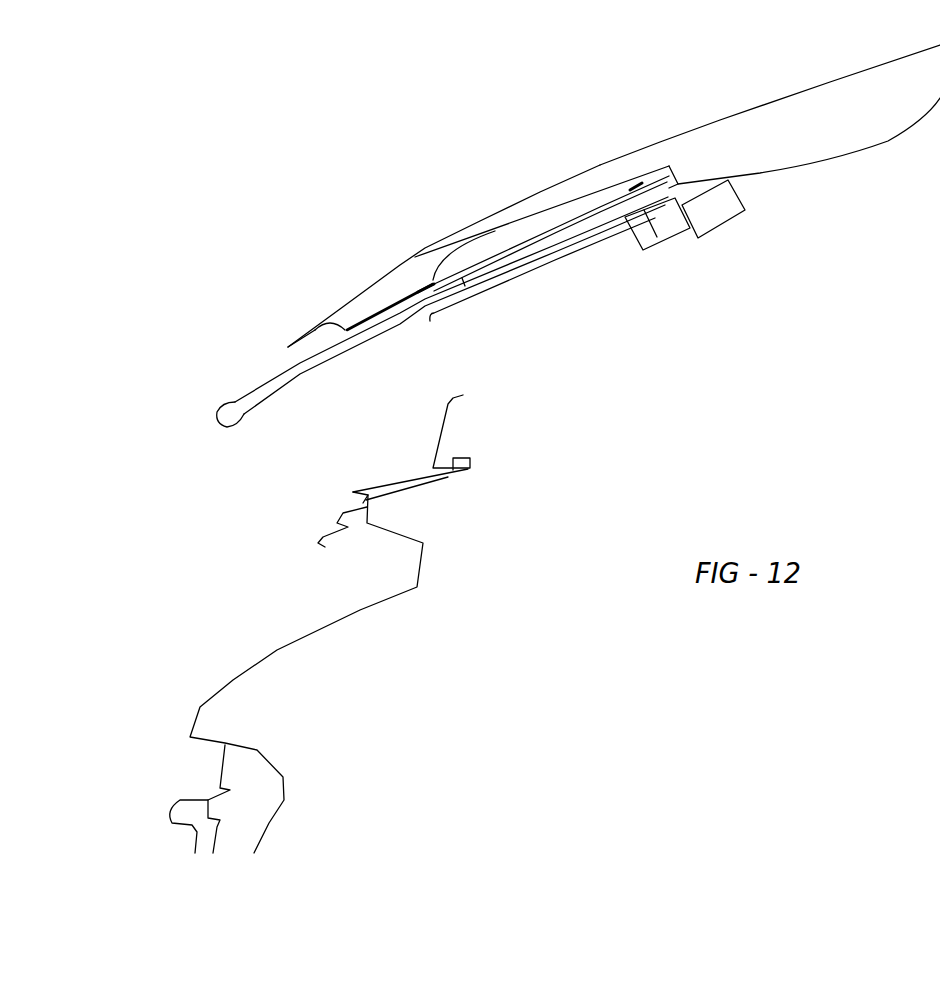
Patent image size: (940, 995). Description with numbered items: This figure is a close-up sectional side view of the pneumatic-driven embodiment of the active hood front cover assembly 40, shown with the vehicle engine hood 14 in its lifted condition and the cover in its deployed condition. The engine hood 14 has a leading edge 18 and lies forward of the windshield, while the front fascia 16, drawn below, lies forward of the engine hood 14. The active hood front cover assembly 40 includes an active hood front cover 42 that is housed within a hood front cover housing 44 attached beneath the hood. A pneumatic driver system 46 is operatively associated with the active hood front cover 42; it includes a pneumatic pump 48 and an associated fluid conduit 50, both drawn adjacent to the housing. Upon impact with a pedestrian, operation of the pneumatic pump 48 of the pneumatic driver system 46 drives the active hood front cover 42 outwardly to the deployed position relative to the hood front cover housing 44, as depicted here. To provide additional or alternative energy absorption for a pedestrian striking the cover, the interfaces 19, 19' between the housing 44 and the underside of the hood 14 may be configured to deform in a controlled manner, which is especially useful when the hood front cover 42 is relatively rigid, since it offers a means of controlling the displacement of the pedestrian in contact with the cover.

The engine hood 14 is at (717, 122).
The front fascia 16 is at (277, 650).
The leading edge 18 is at (356, 298).
The interface 19 is at (397, 223).
The interface 19' is at (594, 135).
The active hood front cover assembly 40 is at (516, 304).
The active hood front cover 42 is at (226, 418).
The hood front cover housing 44 is at (513, 247).
The pneumatic driver system 46 is at (571, 274).
The pneumatic pump 48 is at (733, 212).
The fluid conduit 50 is at (660, 237).